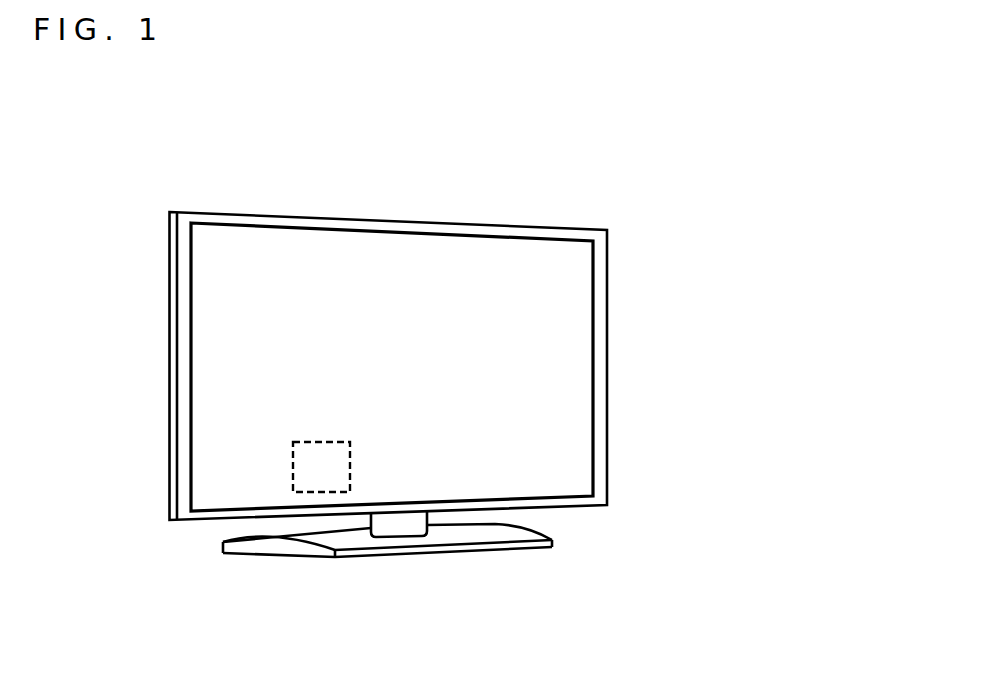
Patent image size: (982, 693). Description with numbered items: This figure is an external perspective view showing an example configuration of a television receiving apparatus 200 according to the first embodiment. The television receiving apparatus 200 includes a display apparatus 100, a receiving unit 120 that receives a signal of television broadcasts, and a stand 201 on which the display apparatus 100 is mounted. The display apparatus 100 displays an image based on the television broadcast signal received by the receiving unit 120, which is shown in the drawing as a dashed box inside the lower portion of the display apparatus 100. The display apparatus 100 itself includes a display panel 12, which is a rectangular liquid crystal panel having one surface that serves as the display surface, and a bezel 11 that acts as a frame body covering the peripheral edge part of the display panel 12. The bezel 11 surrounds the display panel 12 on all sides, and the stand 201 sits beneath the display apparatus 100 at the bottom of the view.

The television receiving apparatus 200 is at (777, 148).
The display apparatus 100 is at (563, 413).
The bezel 11 is at (607, 292).
The display panel 12 is at (562, 347).
The receiving unit 120 is at (293, 465).
The stand 201 is at (503, 537).